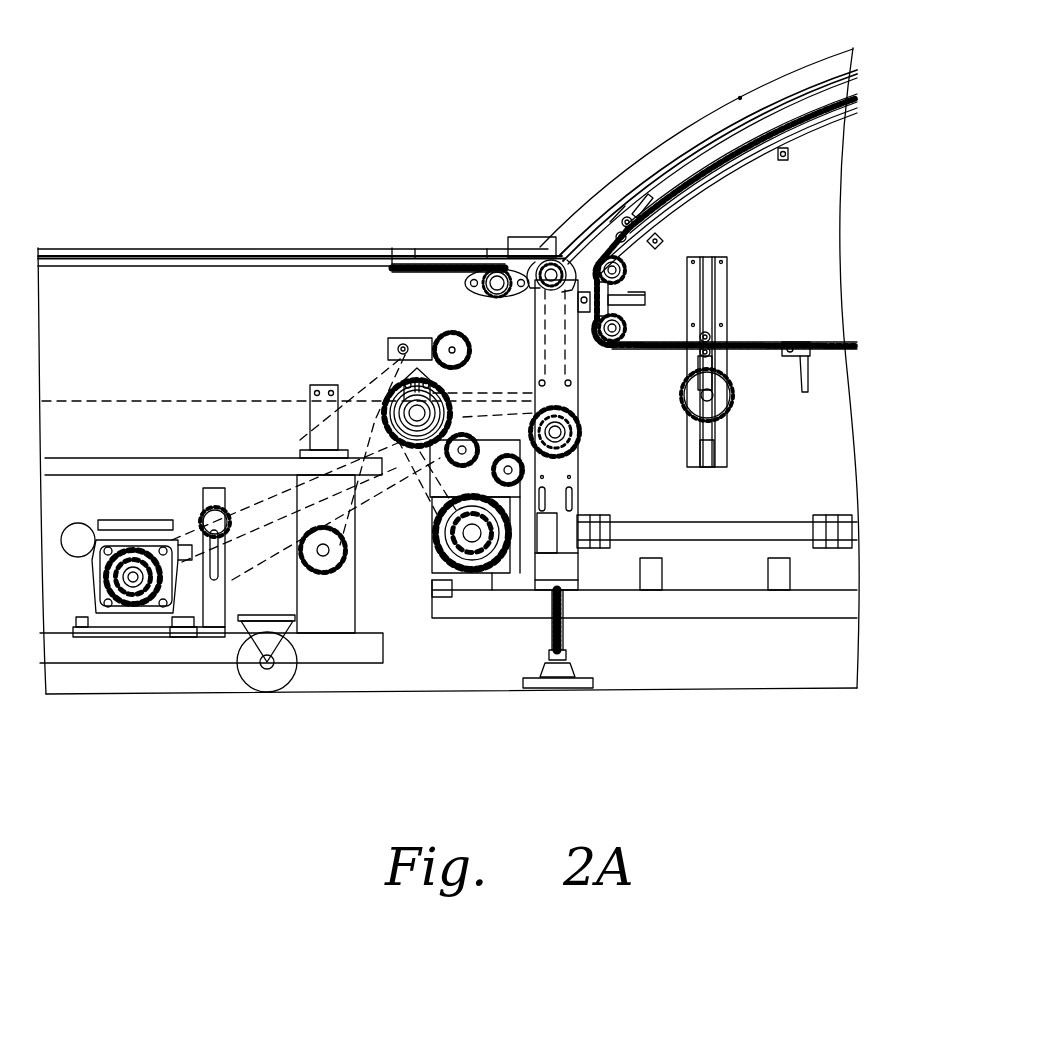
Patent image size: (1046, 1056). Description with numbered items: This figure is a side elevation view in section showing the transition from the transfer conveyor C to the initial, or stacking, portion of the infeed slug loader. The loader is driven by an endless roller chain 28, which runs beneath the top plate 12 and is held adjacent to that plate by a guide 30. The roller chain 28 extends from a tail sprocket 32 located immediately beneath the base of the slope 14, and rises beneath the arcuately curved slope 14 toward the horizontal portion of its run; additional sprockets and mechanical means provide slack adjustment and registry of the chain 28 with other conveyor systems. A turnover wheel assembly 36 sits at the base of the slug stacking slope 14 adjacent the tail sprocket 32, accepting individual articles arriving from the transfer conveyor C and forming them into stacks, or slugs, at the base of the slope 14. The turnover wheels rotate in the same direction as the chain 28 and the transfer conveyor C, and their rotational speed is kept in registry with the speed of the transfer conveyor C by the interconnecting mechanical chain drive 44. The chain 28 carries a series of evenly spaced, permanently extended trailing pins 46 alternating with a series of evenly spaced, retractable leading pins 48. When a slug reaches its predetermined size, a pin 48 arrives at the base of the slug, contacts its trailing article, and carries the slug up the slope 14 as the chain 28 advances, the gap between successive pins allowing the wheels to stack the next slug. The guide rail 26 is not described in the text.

The top plate 12 is at (708, 139).
The slope 14 is at (712, 171).
The outer guide rail 26 is at (696, 141).
The roller chain 28 is at (746, 201).
The guide 30 is at (749, 192).
The tail sprocket 32 is at (638, 299).
The turnover wheel assembly 36 is at (520, 238).
The mechanical chain drive 44 is at (410, 483).
The trailing pins 46 is at (658, 369).
The leading pins 48 is at (646, 312).
The transfer conveyor C is at (422, 224).